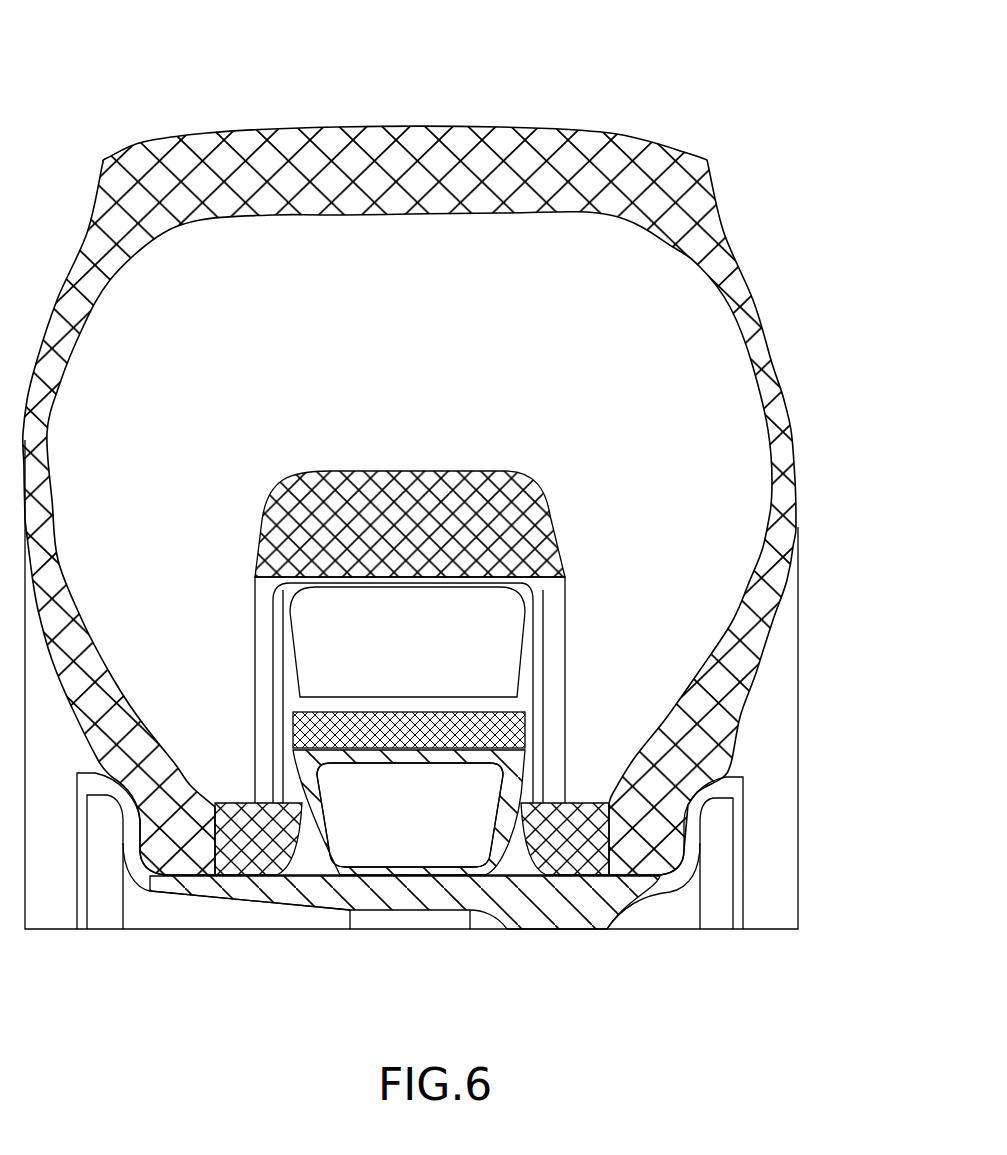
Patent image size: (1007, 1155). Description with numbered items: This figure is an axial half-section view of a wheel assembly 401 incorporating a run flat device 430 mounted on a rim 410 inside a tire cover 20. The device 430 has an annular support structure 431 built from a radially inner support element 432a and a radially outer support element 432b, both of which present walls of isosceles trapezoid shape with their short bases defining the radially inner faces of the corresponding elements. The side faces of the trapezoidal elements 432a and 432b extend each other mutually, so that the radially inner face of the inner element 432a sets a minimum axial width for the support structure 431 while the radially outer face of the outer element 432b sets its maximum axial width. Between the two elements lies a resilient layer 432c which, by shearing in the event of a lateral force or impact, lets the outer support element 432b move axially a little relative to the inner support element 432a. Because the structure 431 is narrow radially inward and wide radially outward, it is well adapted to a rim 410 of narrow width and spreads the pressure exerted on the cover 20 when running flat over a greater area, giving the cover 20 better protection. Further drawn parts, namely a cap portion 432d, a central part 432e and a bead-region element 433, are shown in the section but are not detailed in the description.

The cover 20 is at (568, 118).
The tire and wheel assembly 401 is at (760, 112).
The rim 410 is at (190, 907).
The run flat device 430 is at (425, 596).
The support structure 431 is at (575, 686).
The radially inner support element 432a is at (520, 775).
The radially outer support element 432b is at (537, 605).
The resilient layer 432c is at (295, 722).
The cap 432d is at (298, 487).
The sensor module 432e is at (377, 877).
The bead filler 433 is at (232, 800).